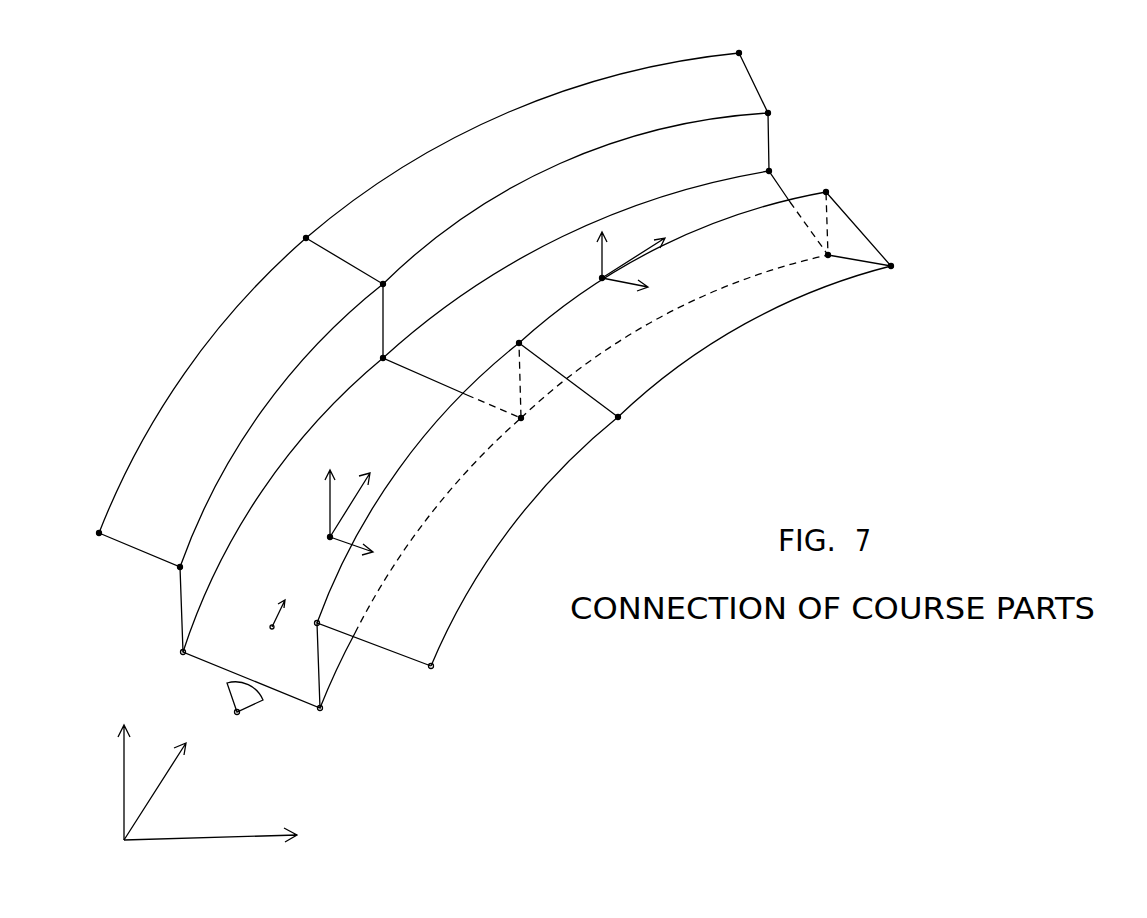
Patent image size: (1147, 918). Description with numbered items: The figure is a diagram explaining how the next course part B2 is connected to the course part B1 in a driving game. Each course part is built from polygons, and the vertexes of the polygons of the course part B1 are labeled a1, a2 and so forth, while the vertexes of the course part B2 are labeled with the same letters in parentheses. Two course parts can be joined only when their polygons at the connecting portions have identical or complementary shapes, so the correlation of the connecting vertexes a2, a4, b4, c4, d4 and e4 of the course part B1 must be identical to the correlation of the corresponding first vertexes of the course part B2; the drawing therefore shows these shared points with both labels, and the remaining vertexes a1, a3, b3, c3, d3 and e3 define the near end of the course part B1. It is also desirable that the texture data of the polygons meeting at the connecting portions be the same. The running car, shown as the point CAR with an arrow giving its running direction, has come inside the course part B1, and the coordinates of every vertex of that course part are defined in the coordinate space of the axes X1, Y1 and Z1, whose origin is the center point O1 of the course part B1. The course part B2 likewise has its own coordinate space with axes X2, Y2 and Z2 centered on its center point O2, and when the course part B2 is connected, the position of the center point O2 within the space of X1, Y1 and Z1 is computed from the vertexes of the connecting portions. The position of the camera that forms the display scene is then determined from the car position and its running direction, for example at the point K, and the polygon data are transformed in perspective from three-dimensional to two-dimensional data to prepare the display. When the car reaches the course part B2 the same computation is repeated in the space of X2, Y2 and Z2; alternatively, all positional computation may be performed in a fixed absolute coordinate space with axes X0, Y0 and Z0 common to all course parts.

The course part B1 is at (358, 473).
The next course part B2 is at (598, 235).
The camera position point K is at (245, 711).
The running car CAR is at (268, 630).
The center point of course part B1 O1 is at (316, 537).
The center point of course part B2 O2 is at (589, 278).
The absolute coordinate axis X0 is at (212, 851).
The absolute coordinate axis Y0 is at (114, 782).
The absolute coordinate axis Z0 is at (168, 791).
The coordinate axis X1 of course part B1 X1 is at (364, 551).
The coordinate axis Y1 of course part B1 Y1 is at (332, 486).
The coordinate axis Z1 of course part B1 Z1 is at (361, 491).
The coordinate axis X2 of course part B2 X2 is at (637, 291).
The coordinate axis Y2 of course part B2 Y2 is at (613, 247).
The coordinate axis Z2 of course part B2 Z2 is at (646, 246).
The vertex a1 of course part B1 a1 is at (447, 667).
The vertex a2 of course part B1 a2 is at (657, 430).
The vertex a3 of course part B1 a3 is at (332, 613).
The vertex a4 of course part B1 a4 is at (511, 325).
The vertex b3 of course part B1 b3 is at (319, 724).
The vertex b4 of course part B1 b4 is at (544, 435).
The vertex c3 of course part B1 c3 is at (172, 665).
The vertex c4 of course part B1 c4 is at (412, 367).
The vertex d3 of course part B1 d3 is at (169, 580).
The vertex d4 of course part B1 d4 is at (374, 275).
The vertex e3 of course part B1 e3 is at (84, 520).
The vertex e4 of course part B1 e4 is at (286, 221).